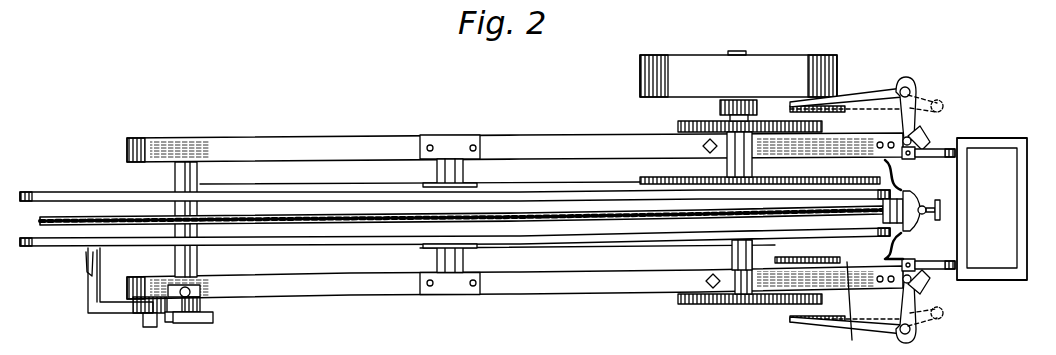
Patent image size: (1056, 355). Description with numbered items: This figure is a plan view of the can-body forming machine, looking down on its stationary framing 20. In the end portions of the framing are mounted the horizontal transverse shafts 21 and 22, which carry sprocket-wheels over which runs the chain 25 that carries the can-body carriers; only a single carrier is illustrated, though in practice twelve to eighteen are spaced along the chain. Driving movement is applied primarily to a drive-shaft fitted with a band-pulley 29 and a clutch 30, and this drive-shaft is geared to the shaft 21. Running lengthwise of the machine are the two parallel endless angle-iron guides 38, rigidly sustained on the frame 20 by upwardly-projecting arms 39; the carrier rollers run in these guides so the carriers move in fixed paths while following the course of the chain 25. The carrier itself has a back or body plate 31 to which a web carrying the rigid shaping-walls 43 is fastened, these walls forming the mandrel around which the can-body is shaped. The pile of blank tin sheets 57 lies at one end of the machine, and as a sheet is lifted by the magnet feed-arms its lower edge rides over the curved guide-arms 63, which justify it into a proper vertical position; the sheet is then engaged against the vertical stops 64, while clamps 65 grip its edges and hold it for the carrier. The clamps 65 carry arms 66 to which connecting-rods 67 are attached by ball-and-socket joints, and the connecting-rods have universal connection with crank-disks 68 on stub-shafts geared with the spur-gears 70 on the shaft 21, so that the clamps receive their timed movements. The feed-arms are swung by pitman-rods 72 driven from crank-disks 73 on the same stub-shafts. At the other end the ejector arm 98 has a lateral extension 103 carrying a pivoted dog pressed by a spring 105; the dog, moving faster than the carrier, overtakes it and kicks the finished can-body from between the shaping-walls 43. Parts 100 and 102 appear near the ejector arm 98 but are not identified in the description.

The stationary framing 20 is at (572, 140).
The transverse shaft 21 is at (731, 253).
The transverse shaft 22 is at (198, 180).
The chain 25 is at (530, 222).
The band-pulley 29 is at (738, 74).
The clutch 30 is at (719, 108).
The back or body plate 31 is at (916, 200).
The endless angle-iron guides 38 is at (580, 191).
The upwardly-projecting arms 39 is at (464, 172).
The rigid shaping-walls 43 is at (942, 205).
The blanks or sheets of tin 57 is at (992, 209).
The guide-arms 63 is at (935, 158).
The vertical stops 64 is at (906, 165).
The clamps 65 is at (930, 146).
The arms 66 is at (912, 122).
The connecting-rods 67 is at (866, 100).
The crank-disks 68 is at (836, 112).
The spur-gears 70 is at (722, 318).
The pitman-rods 72 is at (851, 308).
The crank-disks 73 is at (754, 158).
The arm 98 is at (115, 313).
The block 100 is at (205, 323).
The block 102 is at (150, 328).
The lateral extension 103 is at (101, 280).
The spring 105 is at (84, 256).